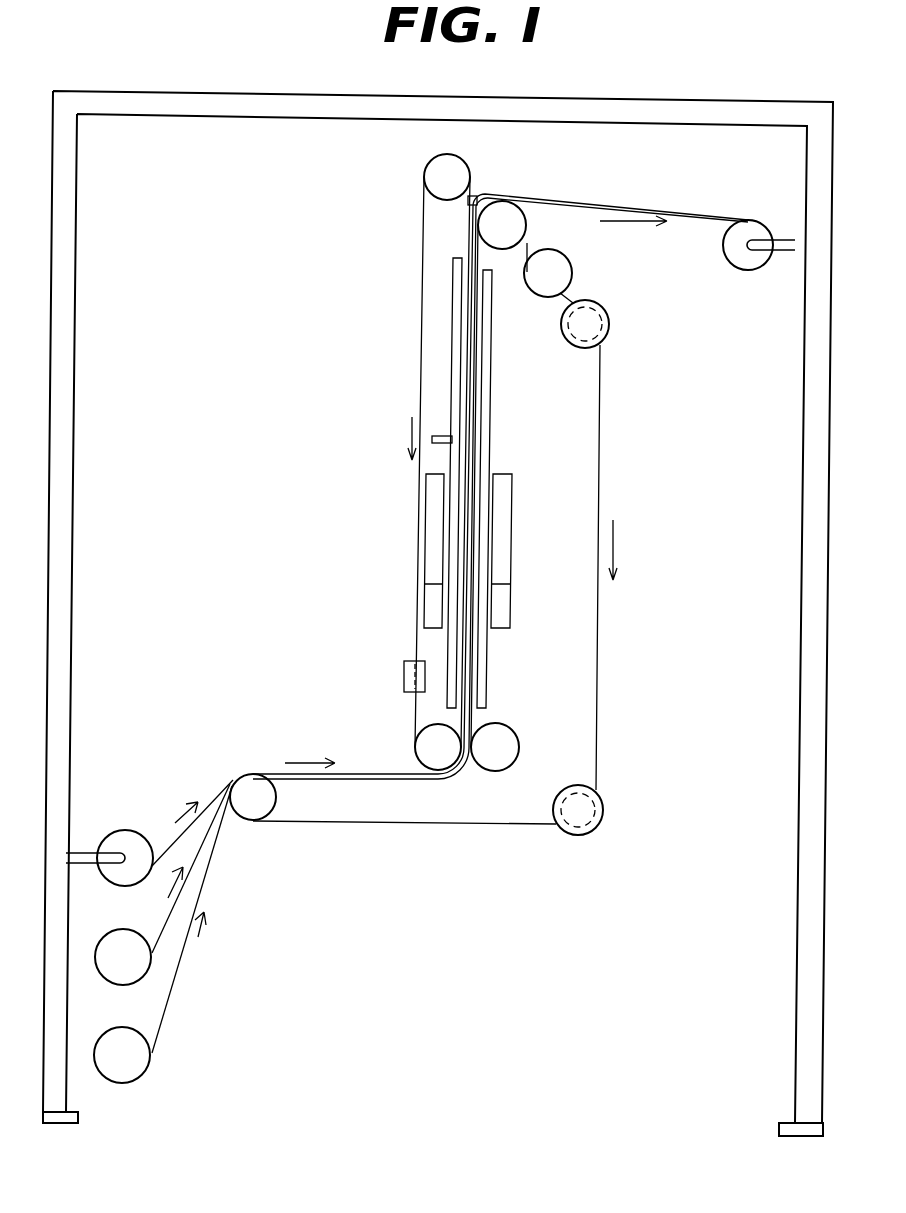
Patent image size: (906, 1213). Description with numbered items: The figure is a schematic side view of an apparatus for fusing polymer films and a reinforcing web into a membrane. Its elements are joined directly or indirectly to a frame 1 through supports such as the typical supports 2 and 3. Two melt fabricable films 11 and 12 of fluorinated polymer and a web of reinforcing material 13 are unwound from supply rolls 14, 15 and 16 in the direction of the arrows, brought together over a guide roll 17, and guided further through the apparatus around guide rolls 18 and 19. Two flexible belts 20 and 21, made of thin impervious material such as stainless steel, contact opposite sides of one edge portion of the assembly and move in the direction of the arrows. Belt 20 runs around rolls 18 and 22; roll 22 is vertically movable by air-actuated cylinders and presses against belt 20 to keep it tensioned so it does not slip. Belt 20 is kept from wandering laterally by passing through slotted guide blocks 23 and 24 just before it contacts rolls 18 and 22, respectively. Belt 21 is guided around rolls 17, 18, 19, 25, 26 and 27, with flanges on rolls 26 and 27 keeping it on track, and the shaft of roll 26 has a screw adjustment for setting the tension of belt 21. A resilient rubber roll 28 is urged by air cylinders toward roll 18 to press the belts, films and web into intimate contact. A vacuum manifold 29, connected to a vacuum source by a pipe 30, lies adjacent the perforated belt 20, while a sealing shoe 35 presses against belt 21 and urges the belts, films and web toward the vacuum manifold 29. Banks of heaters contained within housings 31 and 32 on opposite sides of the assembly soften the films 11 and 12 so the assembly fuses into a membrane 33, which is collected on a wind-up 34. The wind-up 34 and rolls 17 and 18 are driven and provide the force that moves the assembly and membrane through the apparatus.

The frame 1 is at (62, 542).
The support 2 is at (80, 853).
The support 3 is at (782, 251).
The film 11 is at (168, 848).
The film 12 is at (170, 993).
The web of reinforcing material 13 is at (167, 925).
The supply roll 14 is at (120, 838).
The supply roll 15 is at (138, 1062).
The supply roll 16 is at (115, 963).
The guide roll 17 is at (253, 815).
The guide roll 18 is at (425, 745).
The guide roll 19 is at (513, 221).
The flexible belt 20 is at (420, 306).
The flexible belt 21 is at (600, 437).
The roll 22 is at (437, 172).
The guide block 23 is at (405, 682).
The guide block 24 is at (477, 195).
The roll 25 is at (560, 267).
The roll 26 is at (593, 318).
The roll 27 is at (587, 808).
The resilient rubber roll 28 is at (507, 739).
The vacuum manifold 29 is at (457, 353).
The pipe 30 is at (440, 436).
The housing 31 is at (432, 540).
The housing 32 is at (507, 534).
The membrane 33 is at (607, 203).
The wind-up 34 is at (743, 257).
The sealing shoe 35 is at (492, 368).